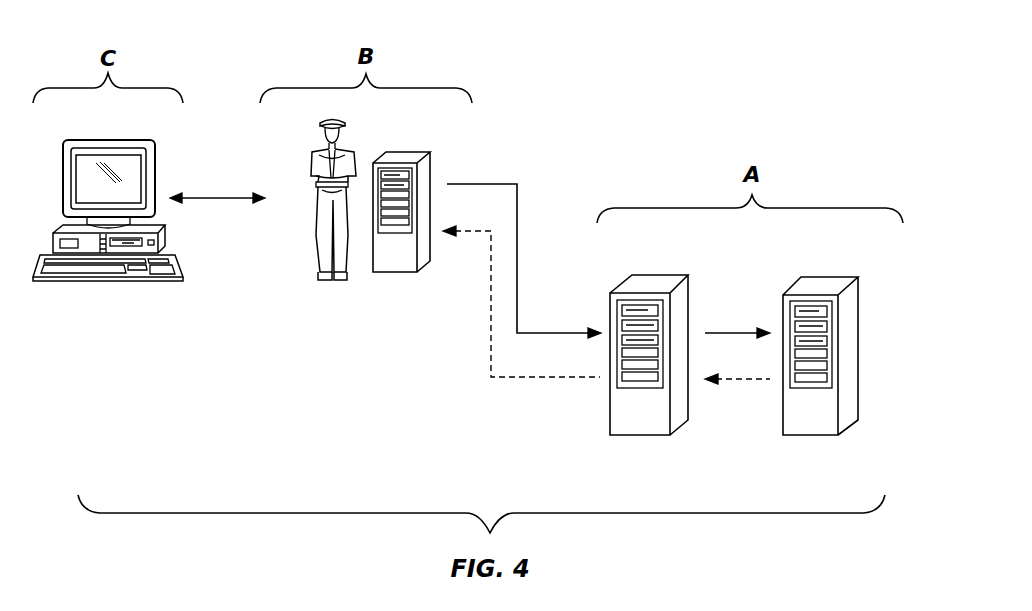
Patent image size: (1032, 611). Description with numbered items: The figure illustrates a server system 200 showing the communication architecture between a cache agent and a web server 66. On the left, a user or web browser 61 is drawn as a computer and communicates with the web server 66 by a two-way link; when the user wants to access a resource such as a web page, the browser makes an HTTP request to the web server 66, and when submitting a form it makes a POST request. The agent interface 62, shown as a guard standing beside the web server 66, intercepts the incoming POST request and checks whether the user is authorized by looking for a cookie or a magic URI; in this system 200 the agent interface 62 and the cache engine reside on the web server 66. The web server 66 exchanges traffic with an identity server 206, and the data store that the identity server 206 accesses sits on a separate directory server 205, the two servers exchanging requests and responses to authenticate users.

The server system 200 is at (790, 57).
The user or web browser 61 is at (123, 140).
The agent interface 62 is at (318, 148).
The web server 66 is at (409, 152).
The identity server 206 is at (660, 275).
The directory server 205 is at (830, 277).